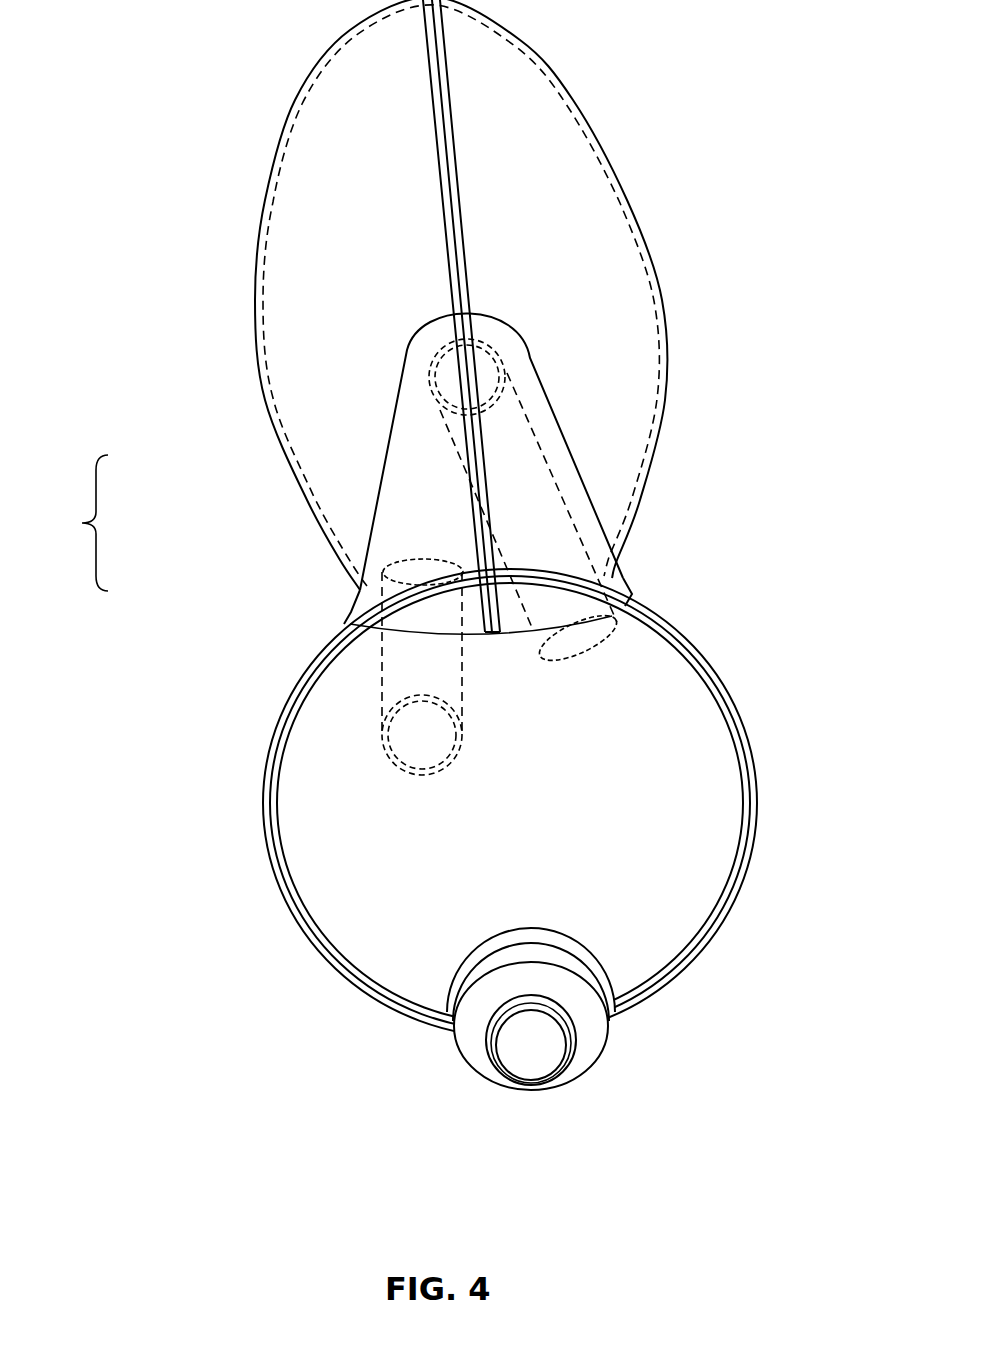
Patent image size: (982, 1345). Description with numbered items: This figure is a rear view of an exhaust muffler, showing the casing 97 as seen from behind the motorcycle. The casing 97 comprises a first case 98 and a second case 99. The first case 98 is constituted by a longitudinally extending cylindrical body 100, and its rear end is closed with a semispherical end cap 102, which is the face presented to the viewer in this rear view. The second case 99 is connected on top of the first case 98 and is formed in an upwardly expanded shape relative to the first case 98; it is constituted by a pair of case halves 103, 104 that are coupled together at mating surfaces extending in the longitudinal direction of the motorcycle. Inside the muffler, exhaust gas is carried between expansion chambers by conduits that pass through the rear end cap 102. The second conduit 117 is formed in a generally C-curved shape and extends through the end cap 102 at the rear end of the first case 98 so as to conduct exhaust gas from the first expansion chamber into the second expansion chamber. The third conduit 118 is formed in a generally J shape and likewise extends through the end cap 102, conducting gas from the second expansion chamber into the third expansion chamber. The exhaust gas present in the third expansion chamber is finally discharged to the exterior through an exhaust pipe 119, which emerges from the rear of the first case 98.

The casing 97 is at (447, 579).
The first case 98 is at (484, 855).
The second case 99 is at (446, 295).
The cylindrical body 100 is at (728, 692).
The end cap 102 is at (707, 763).
The case half 103 is at (640, 262).
The case half 104 is at (300, 298).
The second conduit 117 is at (462, 655).
The third conduit 118 is at (568, 504).
The exhaust pipe 119 is at (573, 1068).